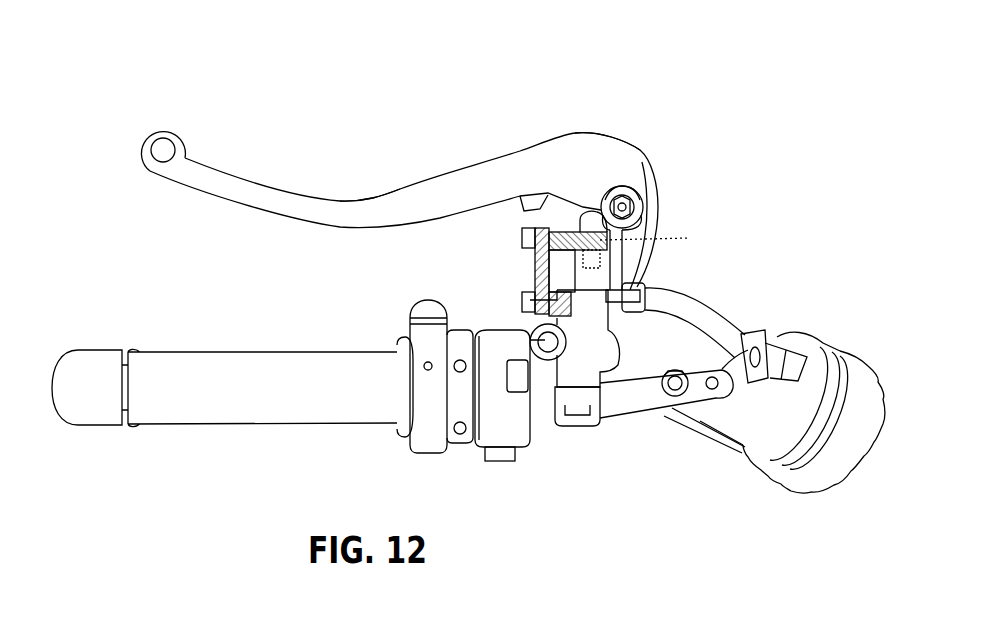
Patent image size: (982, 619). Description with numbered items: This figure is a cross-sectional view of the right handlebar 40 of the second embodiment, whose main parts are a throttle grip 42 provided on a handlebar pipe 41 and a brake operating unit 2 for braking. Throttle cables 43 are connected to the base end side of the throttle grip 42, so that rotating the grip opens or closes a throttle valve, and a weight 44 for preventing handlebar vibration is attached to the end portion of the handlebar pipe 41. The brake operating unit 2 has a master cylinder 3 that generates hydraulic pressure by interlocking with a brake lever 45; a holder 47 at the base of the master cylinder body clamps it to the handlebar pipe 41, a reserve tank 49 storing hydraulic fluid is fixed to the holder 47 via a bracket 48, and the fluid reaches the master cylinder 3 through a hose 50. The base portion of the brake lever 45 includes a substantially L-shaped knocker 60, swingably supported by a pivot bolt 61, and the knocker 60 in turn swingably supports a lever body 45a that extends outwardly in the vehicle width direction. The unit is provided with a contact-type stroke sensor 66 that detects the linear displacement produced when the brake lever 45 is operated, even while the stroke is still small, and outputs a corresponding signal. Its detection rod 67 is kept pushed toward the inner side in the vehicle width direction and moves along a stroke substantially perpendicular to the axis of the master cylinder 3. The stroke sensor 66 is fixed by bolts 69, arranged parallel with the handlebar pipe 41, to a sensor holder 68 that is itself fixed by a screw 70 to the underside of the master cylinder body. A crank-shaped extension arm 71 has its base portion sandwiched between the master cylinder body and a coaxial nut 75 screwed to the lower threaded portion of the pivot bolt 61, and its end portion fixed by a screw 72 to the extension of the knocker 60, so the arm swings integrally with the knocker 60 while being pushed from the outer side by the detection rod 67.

The right handlebar 40 is at (446, 110).
The brake operating unit 2 is at (587, 124).
The brake lever 45 is at (281, 170).
The lever body 45a is at (408, 200).
The stroke sensor 66 is at (549, 224).
The screw 70 is at (591, 212).
The pivot bolt 61 is at (622, 194).
The coaxial nut 75 is at (640, 208).
The knocker 60 is at (652, 218).
The detection rod 67 is at (657, 241).
The bolts 69 is at (522, 300).
The sensor holder 68 is at (535, 275).
The screw 72 is at (632, 290).
The extension arm 71 is at (622, 302).
The throttle cables 43 is at (416, 300).
The weight 44 is at (98, 358).
The throttle grip 42 is at (193, 414).
The handlebar pipe 41 is at (540, 404).
The holder 47 is at (578, 415).
The bracket 48 is at (617, 412).
The master cylinder 3 is at (590, 372).
The hose 50 is at (737, 324).
The reserve tank 49 is at (845, 470).